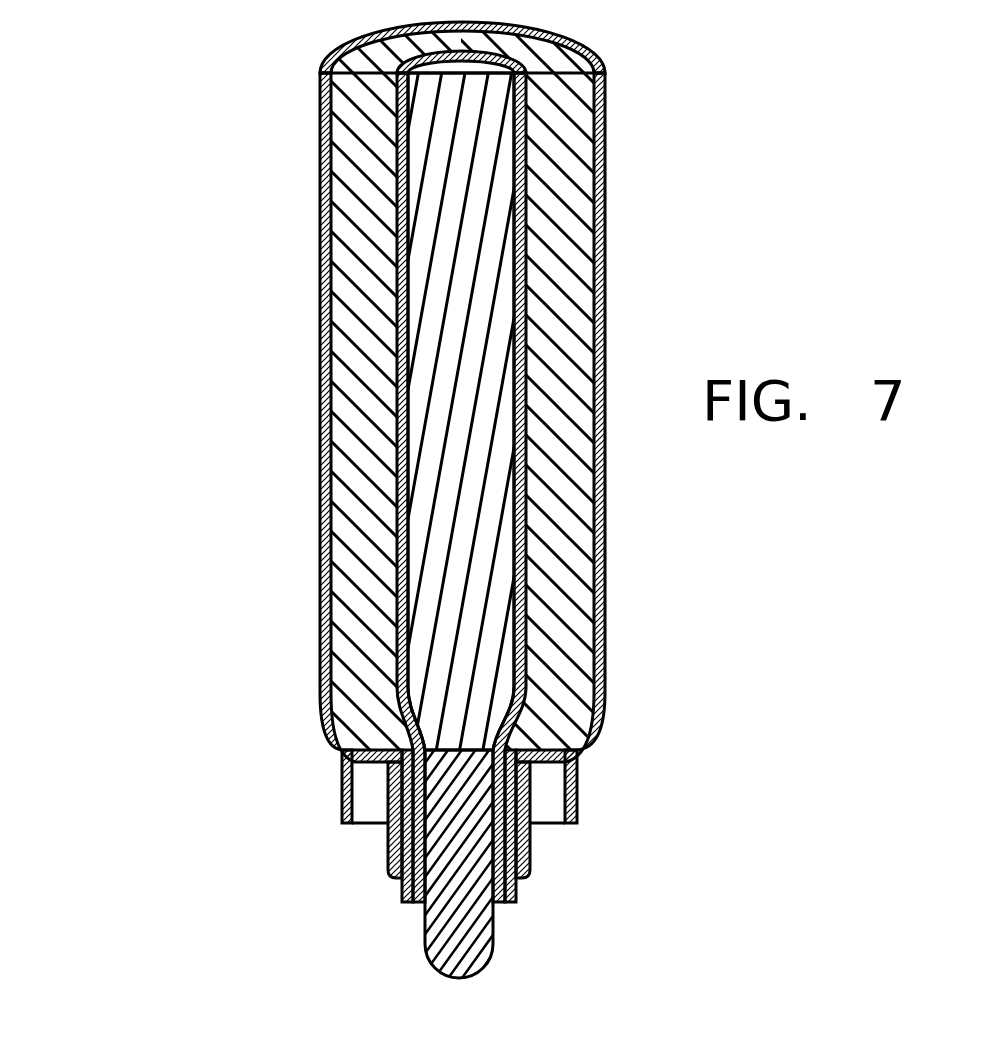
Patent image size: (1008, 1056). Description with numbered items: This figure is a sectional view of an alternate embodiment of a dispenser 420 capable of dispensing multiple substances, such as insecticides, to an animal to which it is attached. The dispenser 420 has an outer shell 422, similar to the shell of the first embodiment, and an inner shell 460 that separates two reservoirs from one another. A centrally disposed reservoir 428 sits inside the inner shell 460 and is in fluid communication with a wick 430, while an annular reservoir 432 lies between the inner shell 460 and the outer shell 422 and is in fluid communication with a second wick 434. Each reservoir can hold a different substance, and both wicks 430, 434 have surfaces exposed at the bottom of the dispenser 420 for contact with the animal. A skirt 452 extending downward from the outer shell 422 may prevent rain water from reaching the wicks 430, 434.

The dispenser 420 is at (215, 566).
The outer shell 422 is at (347, 318).
The centrally disposed reservoir 428 is at (430, 442).
The wick 430 is at (457, 933).
The annular reservoir 432 is at (362, 627).
The wick 434 is at (390, 887).
The skirt 452 is at (577, 787).
The inner shell 460 is at (400, 202).